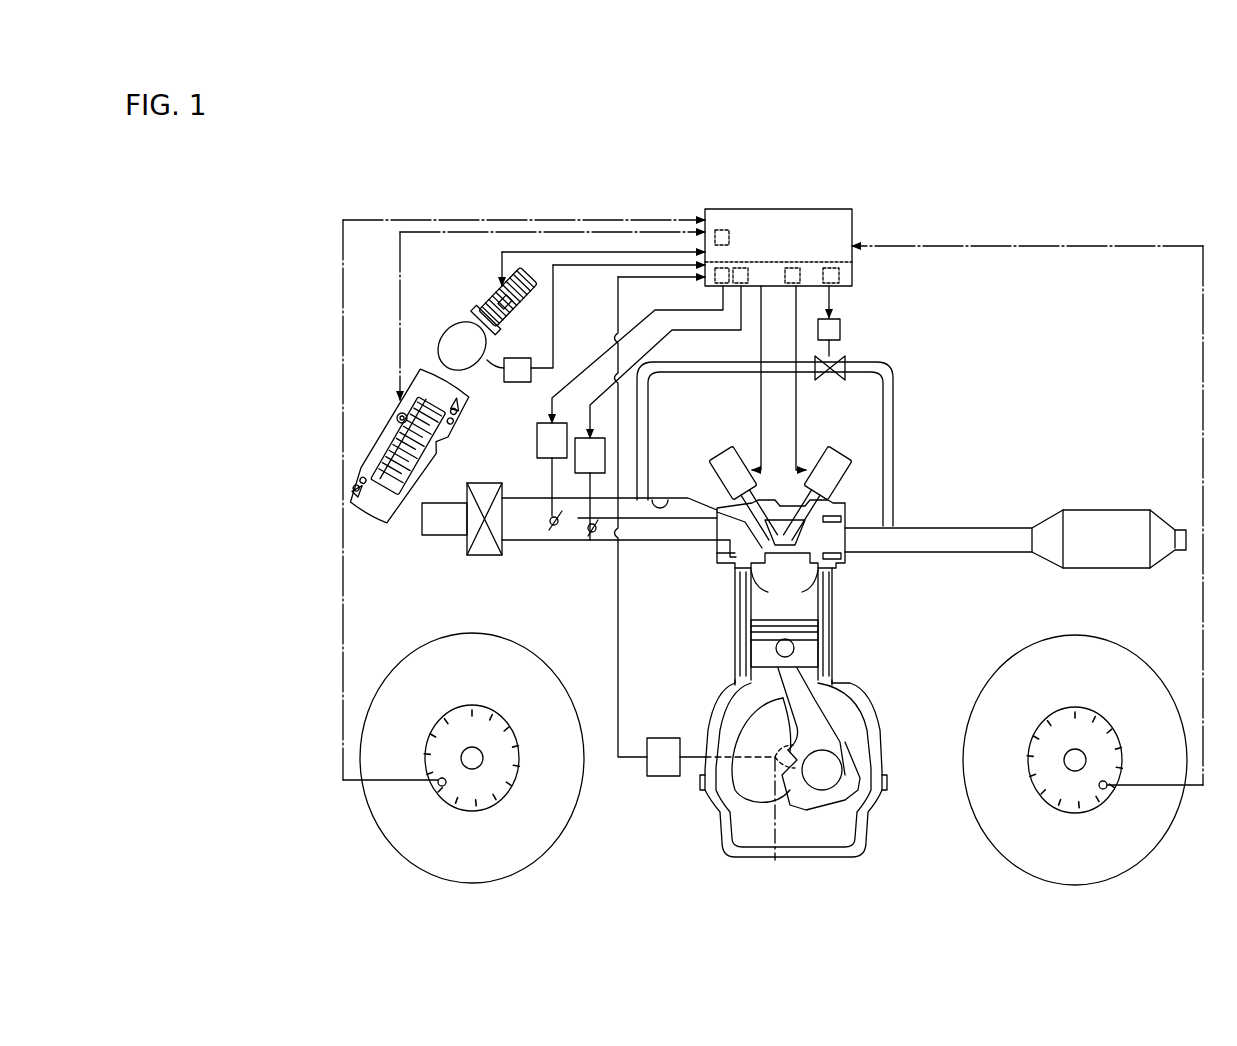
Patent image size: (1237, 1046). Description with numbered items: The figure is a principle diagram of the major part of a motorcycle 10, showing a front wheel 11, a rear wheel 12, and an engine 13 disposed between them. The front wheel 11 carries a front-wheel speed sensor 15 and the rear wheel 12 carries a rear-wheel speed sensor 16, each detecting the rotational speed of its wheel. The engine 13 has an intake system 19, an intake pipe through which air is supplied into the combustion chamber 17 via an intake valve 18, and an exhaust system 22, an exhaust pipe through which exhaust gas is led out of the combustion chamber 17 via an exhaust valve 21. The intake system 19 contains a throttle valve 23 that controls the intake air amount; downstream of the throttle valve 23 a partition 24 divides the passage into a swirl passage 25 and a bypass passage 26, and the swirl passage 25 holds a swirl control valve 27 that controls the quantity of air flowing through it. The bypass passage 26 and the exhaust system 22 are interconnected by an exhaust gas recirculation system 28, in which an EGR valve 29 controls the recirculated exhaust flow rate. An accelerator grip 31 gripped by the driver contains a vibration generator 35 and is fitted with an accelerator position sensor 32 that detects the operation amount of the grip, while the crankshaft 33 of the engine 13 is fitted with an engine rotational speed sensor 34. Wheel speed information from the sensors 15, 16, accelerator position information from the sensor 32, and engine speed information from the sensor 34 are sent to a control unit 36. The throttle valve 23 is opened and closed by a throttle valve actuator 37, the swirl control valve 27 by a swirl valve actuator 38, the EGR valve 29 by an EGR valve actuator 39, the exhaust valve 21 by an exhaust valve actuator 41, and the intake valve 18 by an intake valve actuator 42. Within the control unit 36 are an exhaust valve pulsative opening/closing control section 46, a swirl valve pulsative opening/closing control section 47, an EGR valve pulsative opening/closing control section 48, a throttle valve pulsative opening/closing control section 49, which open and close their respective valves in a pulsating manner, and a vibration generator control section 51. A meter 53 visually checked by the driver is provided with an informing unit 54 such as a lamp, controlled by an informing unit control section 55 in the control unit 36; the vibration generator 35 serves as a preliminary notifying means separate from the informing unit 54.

The motorcycle 10 is at (327, 425).
The front wheel 11 is at (568, 840).
The rear wheel 12 is at (978, 838).
The engine 13 is at (862, 725).
The front-wheel speed sensor 15 is at (440, 800).
The rear-wheel speed sensor 16 is at (1108, 798).
The combustion chamber 17 is at (818, 622).
The intake valve 18 is at (740, 584).
The intake system 19 is at (525, 542).
The exhaust valve 21 is at (840, 578).
The exhaust system 22 is at (962, 555).
The throttle valve 23 is at (554, 528).
The partition 24 is at (630, 540).
The swirl passage 25 is at (594, 534).
The bypass passage 26 is at (662, 498).
The swirl control valve 27 is at (588, 545).
The exhaust gas recirculation system 28 is at (728, 374).
The EGR valve 29 is at (832, 380).
The accelerator grip 31 is at (490, 298).
The accelerator position sensor 32 is at (512, 382).
The crankshaft 33 is at (796, 782).
The engine rotational speed sensor 34 is at (663, 776).
The vibration generator 35 is at (510, 306).
The control unit 36 is at (855, 222).
The throttle valve actuator 37 is at (537, 440).
The swirl valve actuator 38 is at (580, 473).
The EGR valve actuator 39 is at (841, 330).
The exhaust valve actuator 41 is at (845, 483).
The intake valve actuator 42 is at (722, 480).
The exhaust valve pulsative opening/closing control section 46 is at (830, 268).
The swirl valve pulsative opening/closing control section 47 is at (792, 268).
The EGR valve pulsative opening/closing control section 48 is at (840, 262).
The throttle valve pulsative opening/closing control section 49 is at (740, 268).
The vibration generator control section 51 is at (722, 230).
The meter 53 is at (400, 520).
The informing unit 54 is at (392, 400).
The informing unit control section 55 is at (722, 268).